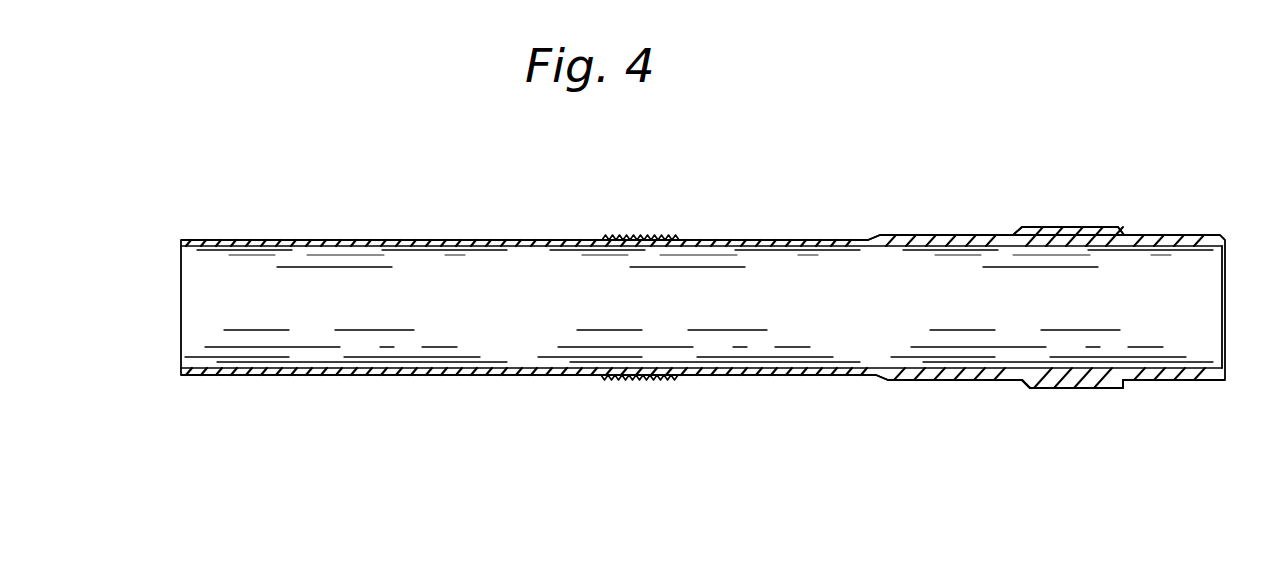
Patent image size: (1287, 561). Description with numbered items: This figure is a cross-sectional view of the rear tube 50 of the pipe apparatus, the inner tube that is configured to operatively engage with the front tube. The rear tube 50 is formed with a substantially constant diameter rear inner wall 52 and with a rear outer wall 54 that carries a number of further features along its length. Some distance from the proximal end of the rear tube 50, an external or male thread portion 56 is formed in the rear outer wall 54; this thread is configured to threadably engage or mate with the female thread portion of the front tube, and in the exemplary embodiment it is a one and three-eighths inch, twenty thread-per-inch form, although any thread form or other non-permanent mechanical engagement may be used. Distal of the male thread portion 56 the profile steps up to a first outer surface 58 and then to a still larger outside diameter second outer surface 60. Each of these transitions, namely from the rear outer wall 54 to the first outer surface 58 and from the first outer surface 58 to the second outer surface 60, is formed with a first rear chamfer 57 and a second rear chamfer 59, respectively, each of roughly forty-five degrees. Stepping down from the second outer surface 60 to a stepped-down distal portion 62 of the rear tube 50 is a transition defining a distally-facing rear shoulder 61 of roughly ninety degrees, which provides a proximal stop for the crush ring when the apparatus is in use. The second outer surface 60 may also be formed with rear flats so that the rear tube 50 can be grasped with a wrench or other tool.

The rear tube 50 is at (801, 114).
The rear inner wall 52 is at (463, 247).
The rear outer wall 54 is at (357, 241).
The male thread portion 56 is at (648, 238).
The first rear chamfer 57 is at (877, 240).
The first outer surface 58 is at (927, 235).
The second rear chamfer 59 is at (1016, 233).
The second outer surface 60 is at (1073, 226).
The rear shoulder 61 is at (1124, 233).
The stepped-down distal portion 62 is at (1202, 237).